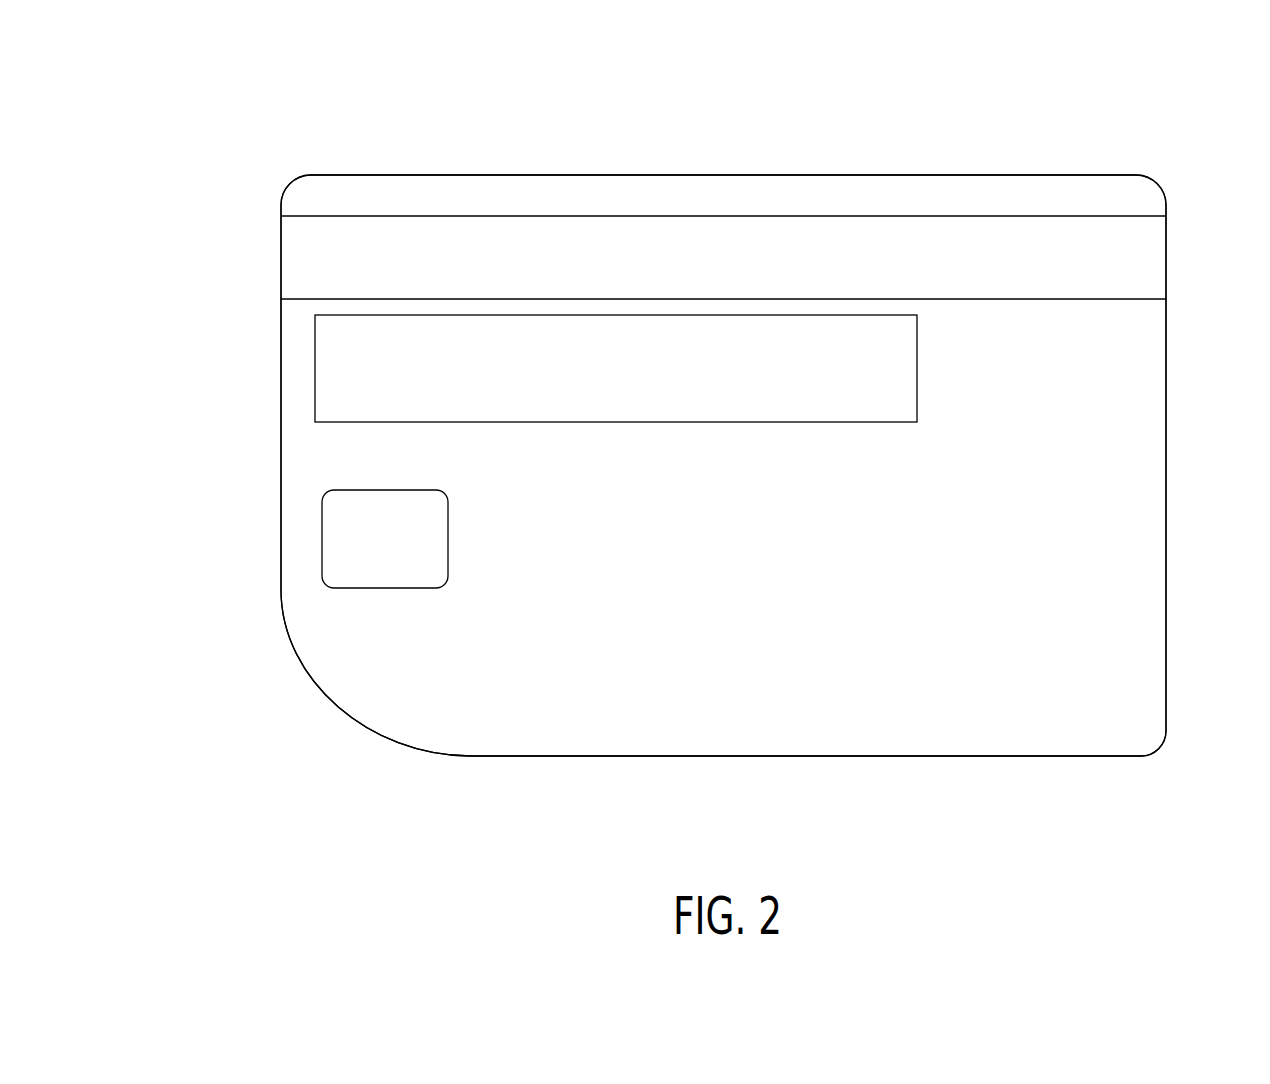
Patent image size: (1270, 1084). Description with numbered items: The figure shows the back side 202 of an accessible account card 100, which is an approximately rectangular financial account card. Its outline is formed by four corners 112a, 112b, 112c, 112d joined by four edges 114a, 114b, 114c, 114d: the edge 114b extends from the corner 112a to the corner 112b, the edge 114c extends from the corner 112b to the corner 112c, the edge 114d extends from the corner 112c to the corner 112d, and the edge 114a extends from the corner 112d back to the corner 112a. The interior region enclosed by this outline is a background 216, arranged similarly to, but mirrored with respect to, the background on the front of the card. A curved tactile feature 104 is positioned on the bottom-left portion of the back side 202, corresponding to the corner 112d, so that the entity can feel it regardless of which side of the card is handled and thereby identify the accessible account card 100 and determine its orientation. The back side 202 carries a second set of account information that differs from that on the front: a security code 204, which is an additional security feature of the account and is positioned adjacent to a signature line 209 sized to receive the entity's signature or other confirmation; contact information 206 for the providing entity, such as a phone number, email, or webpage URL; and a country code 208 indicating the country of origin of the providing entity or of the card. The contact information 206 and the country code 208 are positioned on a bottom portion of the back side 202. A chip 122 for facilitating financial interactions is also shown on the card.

The accessible account card 100 is at (220, 147).
The curved tactile feature 104 is at (357, 722).
The corner 112a is at (1147, 755).
The corner 112b is at (1160, 184).
The corner 112c is at (290, 184).
The corner 112d is at (318, 685).
The edge 114a is at (697, 757).
The edge 114b is at (1166, 497).
The edge 114c is at (697, 175).
The edge 114d is at (281, 400).
The chip 122 is at (365, 524).
The back side 202 is at (1122, 532).
The security code 204 is at (897, 373).
The contact information 206 is at (788, 712).
The country code 208 is at (525, 720).
The signature line 209 is at (365, 365).
The background 216 is at (897, 549).